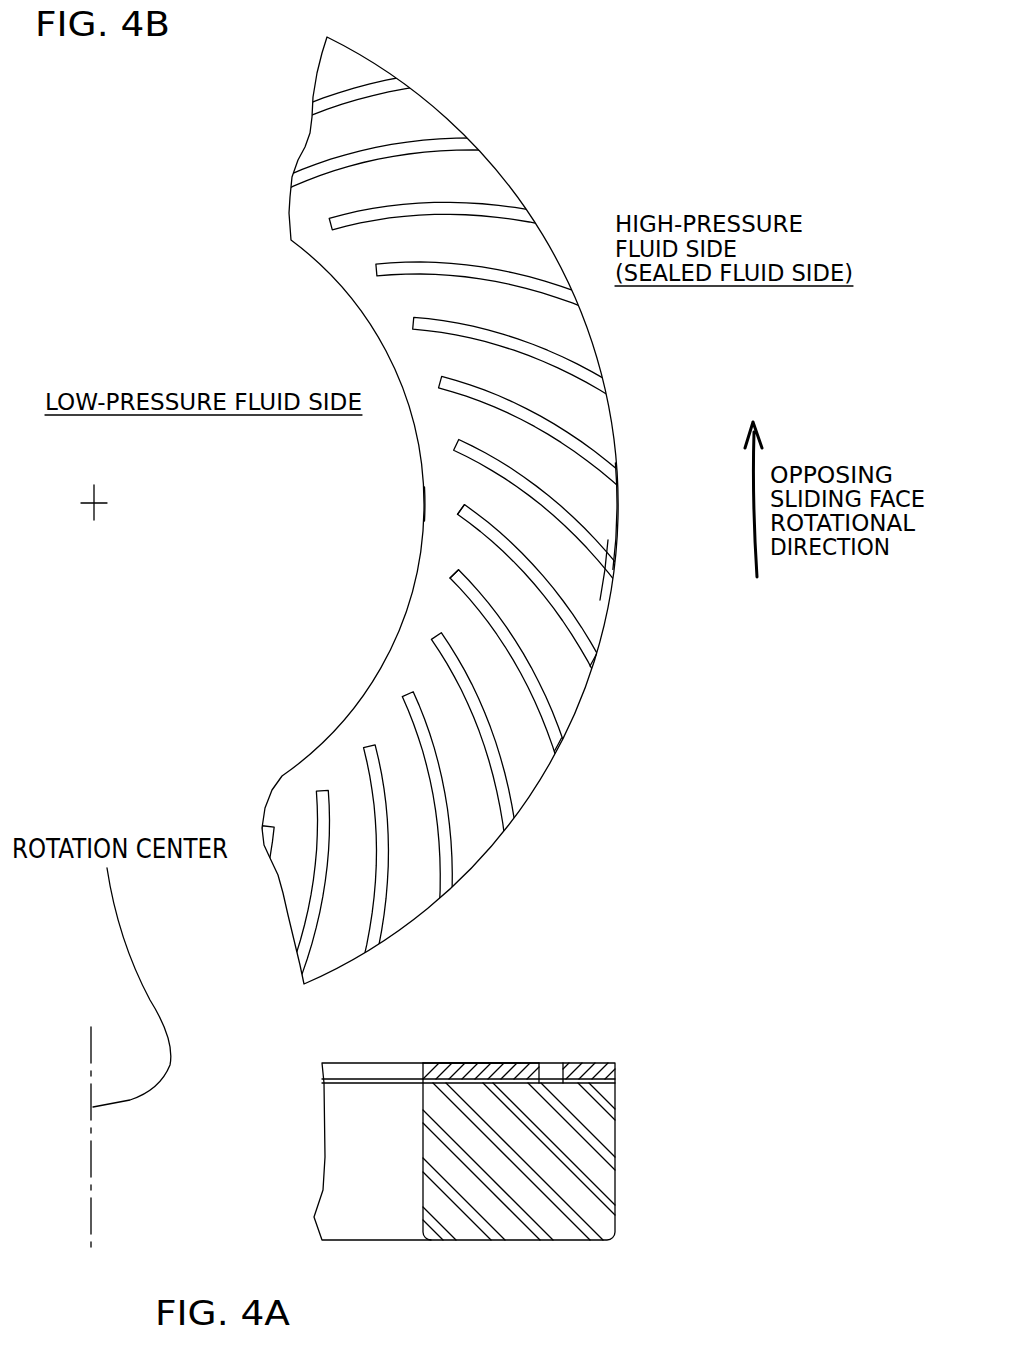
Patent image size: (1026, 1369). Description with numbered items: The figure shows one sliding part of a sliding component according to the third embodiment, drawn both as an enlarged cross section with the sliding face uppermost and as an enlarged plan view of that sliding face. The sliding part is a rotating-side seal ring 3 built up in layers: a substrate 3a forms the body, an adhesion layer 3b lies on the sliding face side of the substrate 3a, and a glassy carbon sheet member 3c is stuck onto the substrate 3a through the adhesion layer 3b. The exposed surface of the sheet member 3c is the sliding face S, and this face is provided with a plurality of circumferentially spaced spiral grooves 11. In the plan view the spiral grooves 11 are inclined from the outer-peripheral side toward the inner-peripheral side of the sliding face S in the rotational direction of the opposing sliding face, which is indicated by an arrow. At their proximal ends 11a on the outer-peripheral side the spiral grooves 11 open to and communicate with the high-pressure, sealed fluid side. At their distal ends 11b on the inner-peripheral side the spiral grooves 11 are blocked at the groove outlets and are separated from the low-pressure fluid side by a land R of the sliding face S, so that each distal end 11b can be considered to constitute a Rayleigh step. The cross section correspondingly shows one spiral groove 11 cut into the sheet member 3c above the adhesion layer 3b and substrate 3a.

In FIG. 4B, the rotating-side seal ring 3 is at (632, 399).
In FIG. 4A, the rotating-side seal ring 3 is at (622, 1060).
In FIG. 4A, the substrate 3a is at (510, 1220).
In FIG. 4A, the adhesion layer 3b is at (617, 1080).
In FIG. 4B, the glassy carbon sheet member 3c is at (603, 505).
In FIG. 4A, the glassy carbon sheet member 3c is at (510, 1063).
In FIG. 4B, the spiral grooves 11 is at (552, 595).
In FIG. 4A, the spiral grooves 11 is at (555, 1063).
In FIG. 4B, the proximal ends 11a is at (592, 657).
In FIG. 4B, the distal ends 11b is at (463, 597).
In FIG. 4B, the sliding face S is at (600, 602).
In FIG. 4A, the sliding face S is at (453, 1063).
In FIG. 4B, the land R is at (447, 503).